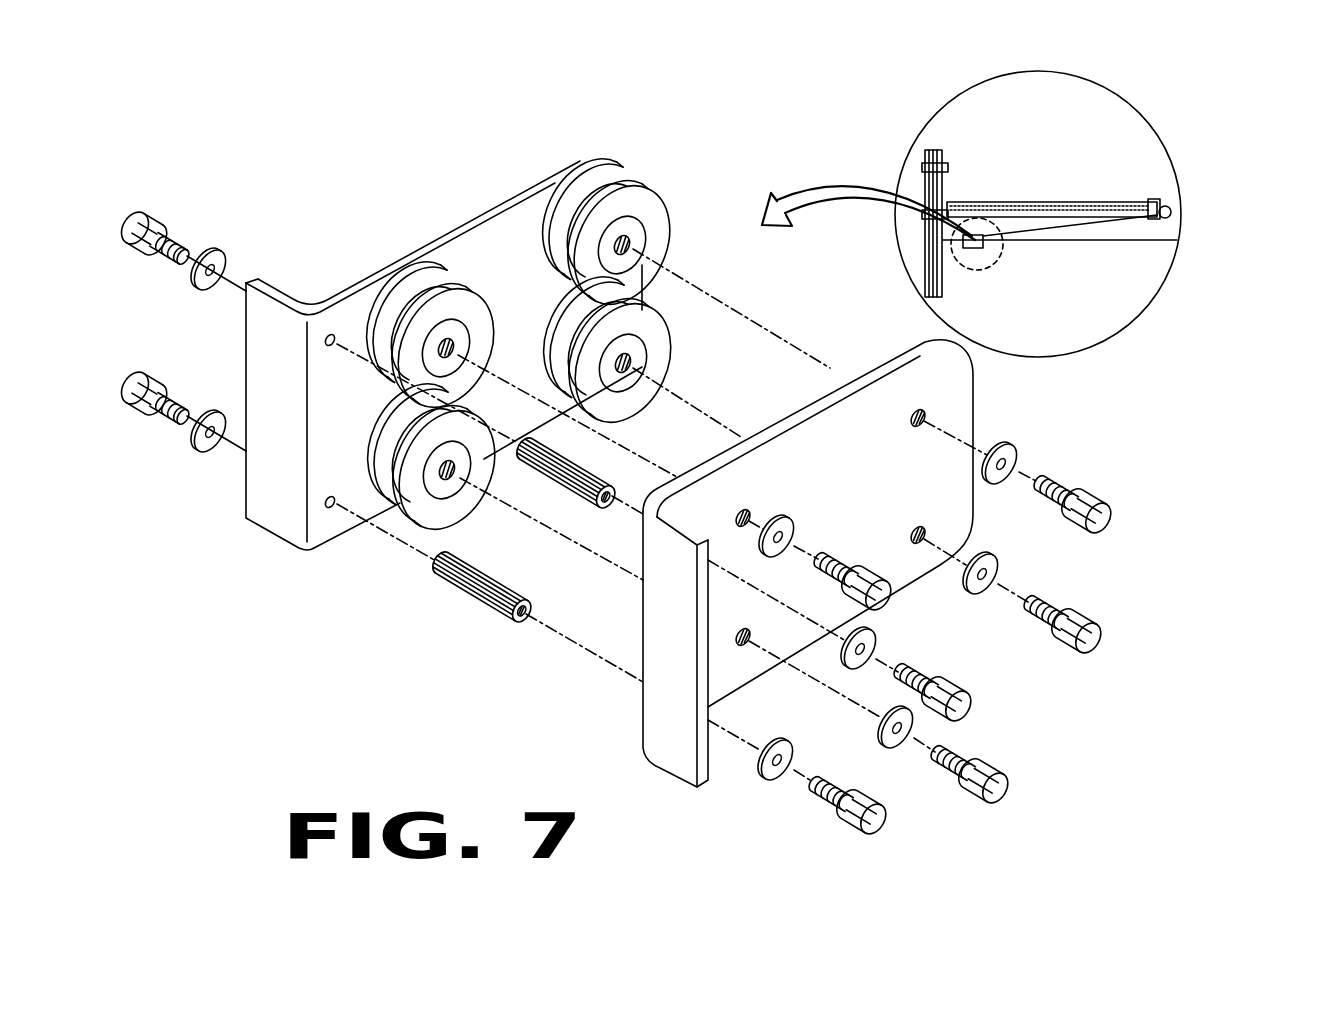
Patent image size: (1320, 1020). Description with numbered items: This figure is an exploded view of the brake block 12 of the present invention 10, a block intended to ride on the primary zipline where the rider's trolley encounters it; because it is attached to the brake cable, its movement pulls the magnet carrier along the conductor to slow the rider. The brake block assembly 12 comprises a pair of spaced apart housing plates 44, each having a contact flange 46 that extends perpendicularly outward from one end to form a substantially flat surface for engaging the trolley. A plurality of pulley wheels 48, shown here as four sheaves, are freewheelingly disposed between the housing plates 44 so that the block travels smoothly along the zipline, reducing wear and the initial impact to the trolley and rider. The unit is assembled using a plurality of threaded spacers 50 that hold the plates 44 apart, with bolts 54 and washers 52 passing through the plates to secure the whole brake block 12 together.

The present invention 10 is at (1230, 165).
The brake block 12 is at (372, 156).
The housing plates 44 is at (353, 287).
The contact flange 46 is at (269, 533).
The pulley wheels 48 is at (488, 453).
The threaded spacers 50 is at (472, 593).
The washers 52 is at (208, 280).
The bolts 54 is at (148, 247).